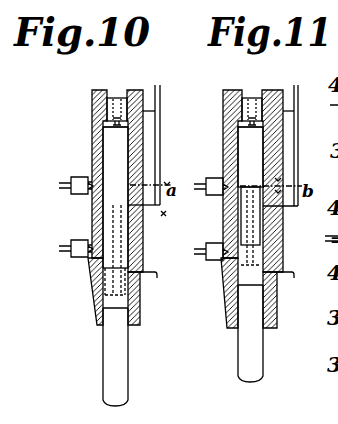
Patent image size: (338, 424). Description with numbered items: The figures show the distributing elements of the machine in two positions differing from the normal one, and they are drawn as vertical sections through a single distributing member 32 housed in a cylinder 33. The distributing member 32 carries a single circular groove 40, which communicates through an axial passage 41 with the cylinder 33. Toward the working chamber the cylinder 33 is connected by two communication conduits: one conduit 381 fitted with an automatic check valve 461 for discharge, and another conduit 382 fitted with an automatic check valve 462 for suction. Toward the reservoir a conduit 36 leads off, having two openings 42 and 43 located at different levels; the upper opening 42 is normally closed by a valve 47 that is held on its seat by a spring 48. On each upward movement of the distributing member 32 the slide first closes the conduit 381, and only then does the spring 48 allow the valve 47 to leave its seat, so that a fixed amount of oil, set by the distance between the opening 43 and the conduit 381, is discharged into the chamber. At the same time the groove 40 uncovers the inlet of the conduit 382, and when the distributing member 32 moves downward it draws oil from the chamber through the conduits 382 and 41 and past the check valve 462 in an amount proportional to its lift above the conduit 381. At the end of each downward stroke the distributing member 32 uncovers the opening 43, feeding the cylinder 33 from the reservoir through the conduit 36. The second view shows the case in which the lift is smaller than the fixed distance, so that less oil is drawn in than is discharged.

In FIG. 10, the spring 48 is at (112, 98).
In FIG. 11, the spring 48 is at (241, 101).
In FIG. 10, the opening 42 is at (147, 108).
In FIG. 11, the opening 42 is at (279, 110).
In FIG. 10, the valve 47 is at (106, 117).
In FIG. 11, the valve 47 is at (240, 118).
In FIG. 10, the cylinder 33 is at (108, 139).
In FIG. 11, the cylinder 33 is at (245, 142).
In FIG. 10, the communication conduit 381 is at (92, 174).
In FIG. 11, the communication conduit 381 is at (235, 178).
In FIG. 10, the automatic check valve 461 is at (76, 195).
In FIG. 11, the automatic check valve 461 is at (233, 197).
In FIG. 10, the axial passage 41 is at (110, 231).
In FIG. 11, the axial passage 41 is at (247, 267).
In FIG. 10, the automatic check valve 462 is at (85, 266).
In FIG. 11, the automatic check valve 462 is at (233, 262).
In FIG. 10, the communication conduit 382 is at (90, 270).
In FIG. 11, the communication conduit 382 is at (224, 276).
In FIG. 10, the circular groove 40 is at (142, 301).
In FIG. 11, the circular groove 40 is at (273, 280).
In FIG. 10, the opening 43 is at (152, 208).
In FIG. 11, the opening 43 is at (284, 208).
In FIG. 10, the conduit 36 is at (164, 141).
In FIG. 11, the conduit 36 is at (296, 160).
In FIG. 10, the distributing member 32 is at (112, 352).
In FIG. 11, the distributing member 32 is at (254, 352).